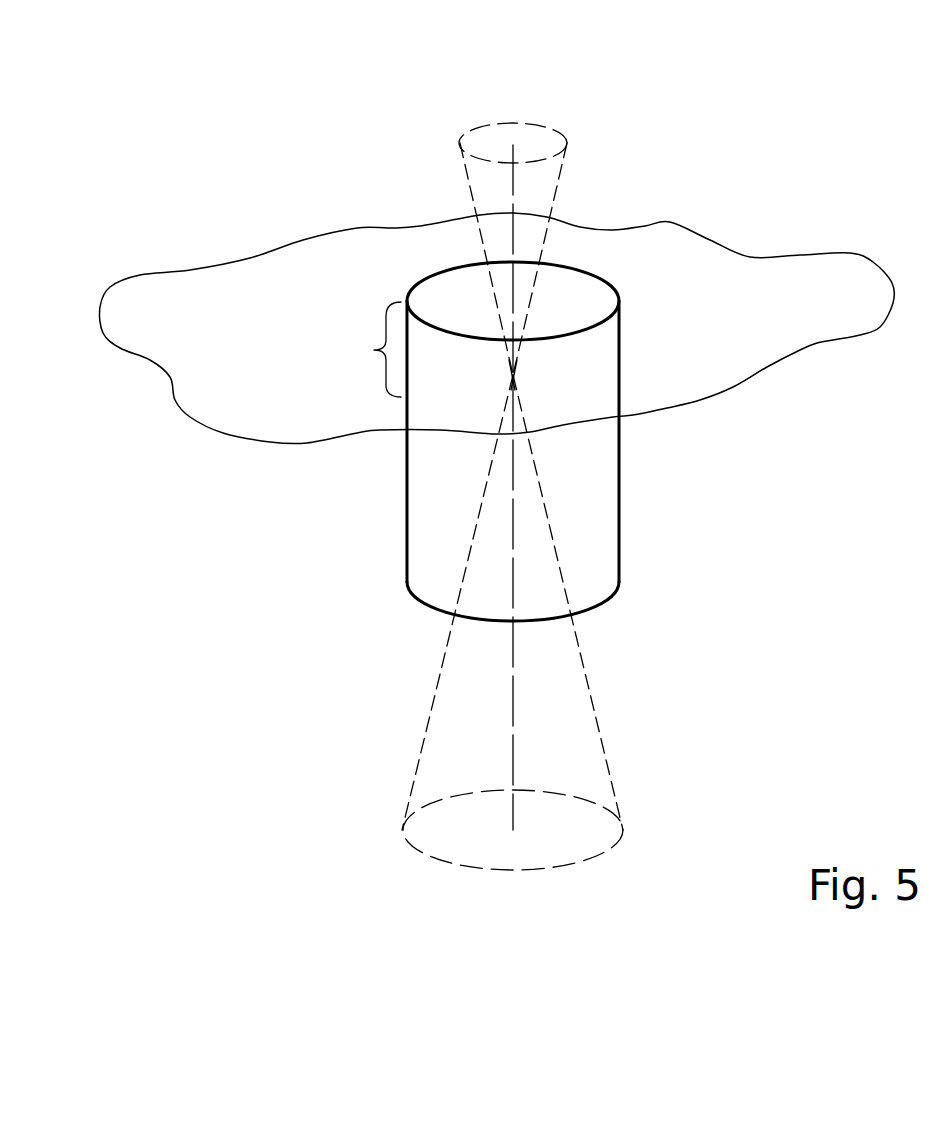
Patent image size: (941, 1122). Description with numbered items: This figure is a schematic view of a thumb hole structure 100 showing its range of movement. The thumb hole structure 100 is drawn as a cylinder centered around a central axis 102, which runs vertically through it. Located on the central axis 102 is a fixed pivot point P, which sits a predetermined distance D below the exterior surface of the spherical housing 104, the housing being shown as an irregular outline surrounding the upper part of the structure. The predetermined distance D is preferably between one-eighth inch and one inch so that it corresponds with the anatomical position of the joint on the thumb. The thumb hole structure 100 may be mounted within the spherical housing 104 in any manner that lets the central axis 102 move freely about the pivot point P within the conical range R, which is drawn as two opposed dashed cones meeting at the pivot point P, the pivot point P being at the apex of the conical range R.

The thumb hole structure 100 is at (618, 481).
The central axis 102 is at (515, 709).
The spherical housing 104 is at (780, 335).
The conical range R is at (534, 123).
The pivot point P is at (515, 373).
The predetermined distance D is at (374, 349).